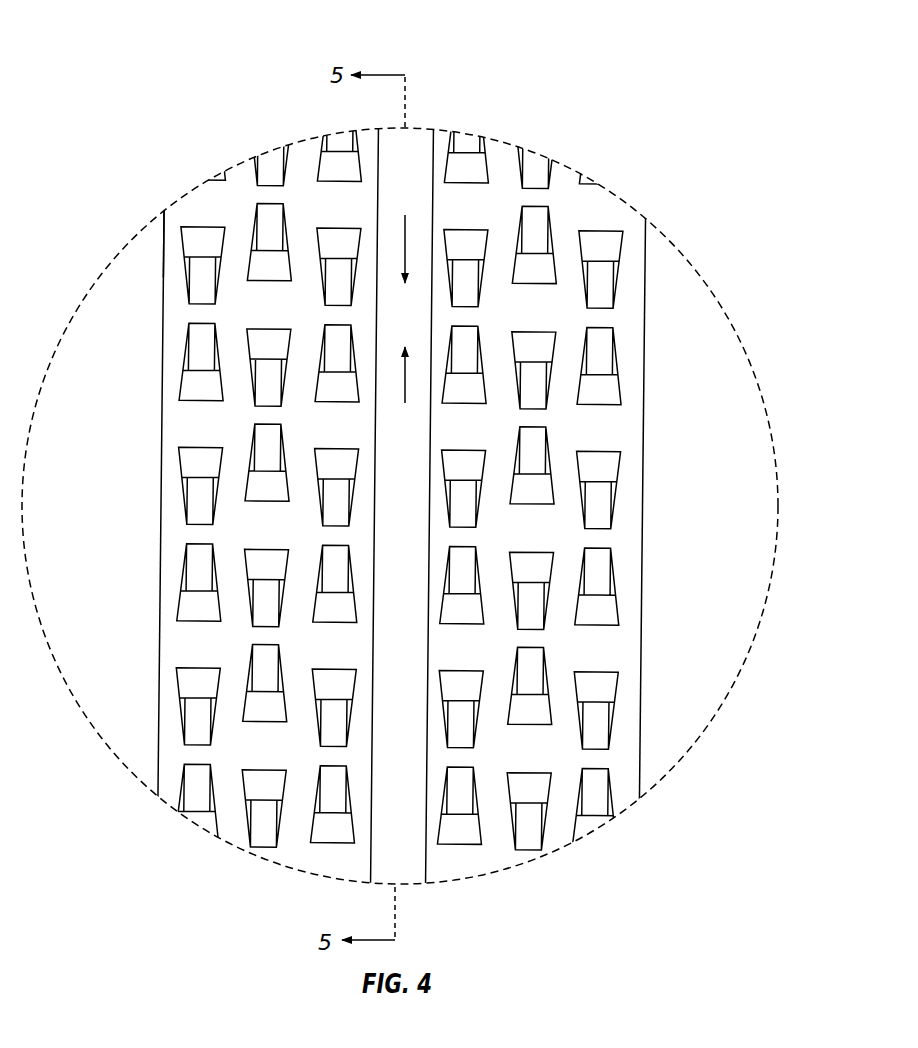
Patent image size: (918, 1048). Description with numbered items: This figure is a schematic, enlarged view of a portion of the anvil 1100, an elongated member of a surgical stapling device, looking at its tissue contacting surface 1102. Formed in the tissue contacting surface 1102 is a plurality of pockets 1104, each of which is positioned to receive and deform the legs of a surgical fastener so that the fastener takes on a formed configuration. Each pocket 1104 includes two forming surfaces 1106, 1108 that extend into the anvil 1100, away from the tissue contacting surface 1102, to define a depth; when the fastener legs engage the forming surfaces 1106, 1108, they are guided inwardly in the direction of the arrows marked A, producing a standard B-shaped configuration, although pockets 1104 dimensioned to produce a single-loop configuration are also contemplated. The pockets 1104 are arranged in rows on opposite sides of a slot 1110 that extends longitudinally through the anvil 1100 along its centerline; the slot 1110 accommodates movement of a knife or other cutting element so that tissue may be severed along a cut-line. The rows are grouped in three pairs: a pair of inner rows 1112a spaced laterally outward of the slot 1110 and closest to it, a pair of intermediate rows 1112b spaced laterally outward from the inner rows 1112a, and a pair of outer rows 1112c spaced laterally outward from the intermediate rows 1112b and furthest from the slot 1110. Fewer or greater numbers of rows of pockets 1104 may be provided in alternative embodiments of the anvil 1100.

The anvil 1100 is at (665, 55).
The tissue contacting surface 1102 is at (168, 536).
The pocket 1104 is at (168, 207).
The forming surface 1106 is at (197, 278).
The forming surface 1108 is at (197, 353).
The slot 1110 is at (403, 843).
The inner rows 1112a is at (336, 128).
The intermediate rows 1112b is at (267, 150).
The outer rows 1112c is at (192, 198).